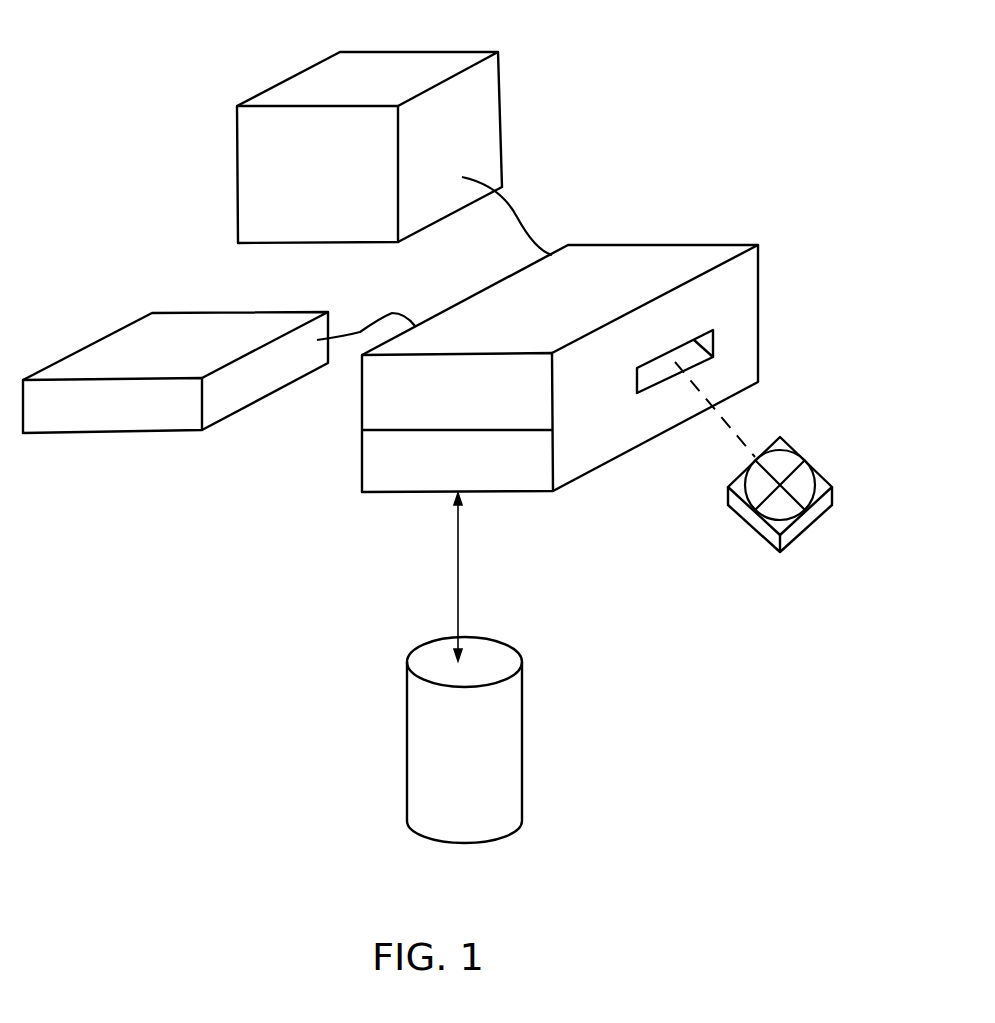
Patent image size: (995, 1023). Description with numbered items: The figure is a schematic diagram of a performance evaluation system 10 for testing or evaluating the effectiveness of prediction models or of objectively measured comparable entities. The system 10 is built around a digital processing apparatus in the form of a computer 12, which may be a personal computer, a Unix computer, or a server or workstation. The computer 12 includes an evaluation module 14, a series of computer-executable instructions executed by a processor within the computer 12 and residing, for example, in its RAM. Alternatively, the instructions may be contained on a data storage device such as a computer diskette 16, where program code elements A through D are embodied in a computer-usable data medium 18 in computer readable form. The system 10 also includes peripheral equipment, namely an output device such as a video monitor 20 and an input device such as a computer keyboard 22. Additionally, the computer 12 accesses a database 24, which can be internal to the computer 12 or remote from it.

The performance evaluation system 10 is at (250, 504).
The computer 12 is at (627, 258).
The evaluation module 14 is at (538, 460).
The computer diskette 16 is at (822, 475).
The computer-usable data medium 18 is at (782, 448).
The video monitor 20 is at (489, 88).
The computer keyboard 22 is at (165, 328).
The database 24 is at (510, 707).